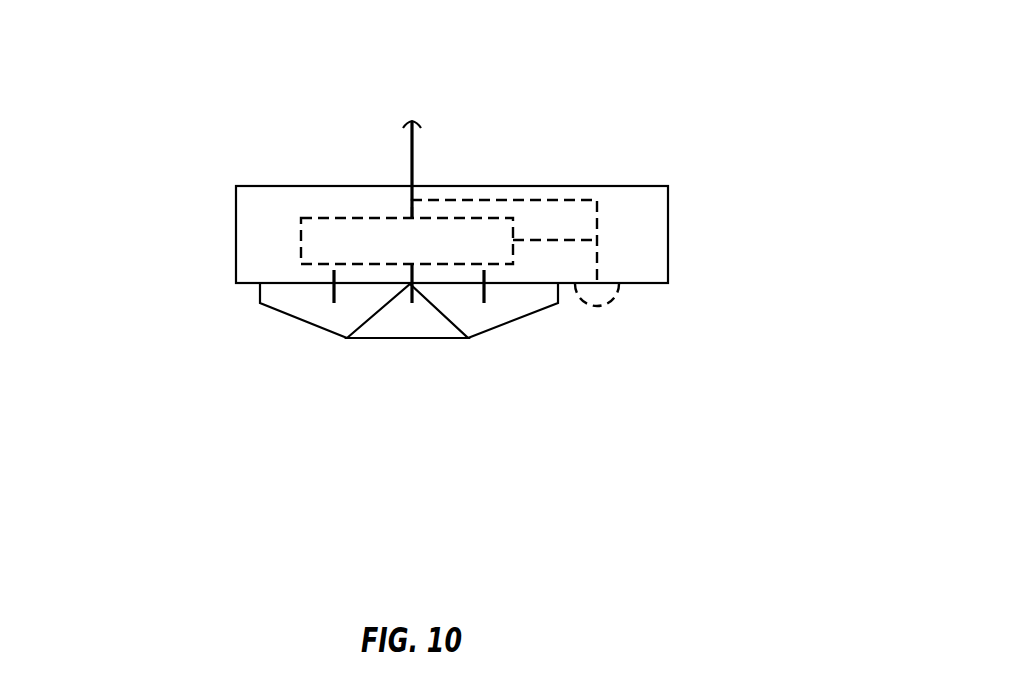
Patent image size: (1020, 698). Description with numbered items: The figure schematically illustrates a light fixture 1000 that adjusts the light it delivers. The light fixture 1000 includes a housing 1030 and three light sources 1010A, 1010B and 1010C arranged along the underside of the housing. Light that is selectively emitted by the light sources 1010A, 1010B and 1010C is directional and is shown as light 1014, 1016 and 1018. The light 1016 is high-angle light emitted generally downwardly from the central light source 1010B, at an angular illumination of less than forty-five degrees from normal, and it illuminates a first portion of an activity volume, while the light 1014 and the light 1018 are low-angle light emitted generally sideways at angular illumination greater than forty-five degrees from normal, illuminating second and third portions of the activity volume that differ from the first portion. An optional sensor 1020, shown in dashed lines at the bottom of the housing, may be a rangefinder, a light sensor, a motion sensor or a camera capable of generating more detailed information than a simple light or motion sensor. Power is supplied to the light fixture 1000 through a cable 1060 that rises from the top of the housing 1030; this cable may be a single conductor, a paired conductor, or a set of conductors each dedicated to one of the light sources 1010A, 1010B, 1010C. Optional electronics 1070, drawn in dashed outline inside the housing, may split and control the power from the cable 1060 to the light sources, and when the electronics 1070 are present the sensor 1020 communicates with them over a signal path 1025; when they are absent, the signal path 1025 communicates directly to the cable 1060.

The light fixture 1000 is at (630, 80).
The housing 1030 is at (236, 232).
The cable 1060 is at (412, 146).
The signal path 1025 is at (597, 262).
The electronics 1070 is at (407, 241).
The sensor 1020 is at (622, 295).
The light source 1010A is at (277, 301).
The light source 1010B is at (362, 340).
The light source 1010C is at (475, 323).
The light 1014 is at (293, 320).
The light 1016 is at (403, 340).
The light 1018 is at (520, 322).